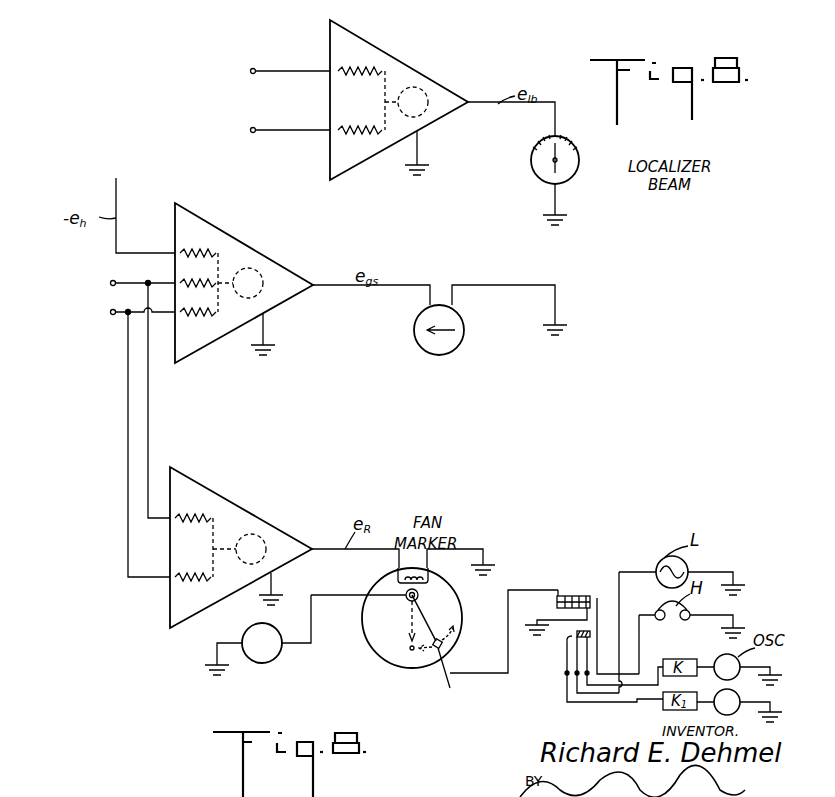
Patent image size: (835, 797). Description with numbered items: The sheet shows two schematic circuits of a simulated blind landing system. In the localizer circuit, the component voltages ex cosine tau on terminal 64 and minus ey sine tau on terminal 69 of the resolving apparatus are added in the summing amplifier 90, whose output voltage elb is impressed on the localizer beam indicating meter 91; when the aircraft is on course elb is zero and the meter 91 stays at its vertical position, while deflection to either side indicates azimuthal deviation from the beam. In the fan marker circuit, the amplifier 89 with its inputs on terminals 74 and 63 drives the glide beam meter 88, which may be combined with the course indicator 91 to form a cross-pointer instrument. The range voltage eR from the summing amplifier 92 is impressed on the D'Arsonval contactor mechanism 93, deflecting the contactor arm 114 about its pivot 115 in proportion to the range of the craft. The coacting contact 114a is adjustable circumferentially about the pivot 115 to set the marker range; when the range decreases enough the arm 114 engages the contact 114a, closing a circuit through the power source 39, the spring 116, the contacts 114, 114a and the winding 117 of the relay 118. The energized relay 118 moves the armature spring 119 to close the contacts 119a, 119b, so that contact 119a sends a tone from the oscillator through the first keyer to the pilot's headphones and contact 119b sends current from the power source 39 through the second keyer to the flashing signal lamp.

In FIG. 8, the terminal 64 is at (258, 68).
In FIG. 8, the terminal 69 is at (254, 133).
In FIG. 8, the summing amplifier 90 is at (407, 68).
In FIG. 8, the localizer beam indicating meter 91 is at (575, 177).
In FIG. 9, the terminal 74 is at (118, 280).
In FIG. 9, the terminal 63 is at (113, 316).
In FIG. 9, the amplifier 89 is at (268, 257).
In FIG. 9, the glide beam meter 88 is at (454, 352).
In FIG. 9, the summing amplifier 92 is at (248, 508).
In FIG. 9, the power source 39 is at (256, 663).
In FIG. 9, the D'Arsonval contactor mechanism 93 is at (366, 658).
In FIG. 9, the pivot 115 is at (425, 597).
In FIG. 9, the spring 116 is at (406, 601).
In FIG. 9, the contactor arm 114 is at (429, 626).
In FIG. 9, the contact 114a is at (454, 669).
In FIG. 9, the relay 118 is at (558, 592).
In FIG. 9, the winding 117 is at (569, 595).
In FIG. 9, the armature spring 119 is at (609, 594).
In FIG. 9, the contact 119a is at (592, 634).
In FIG. 9, the contact 119b is at (570, 641).